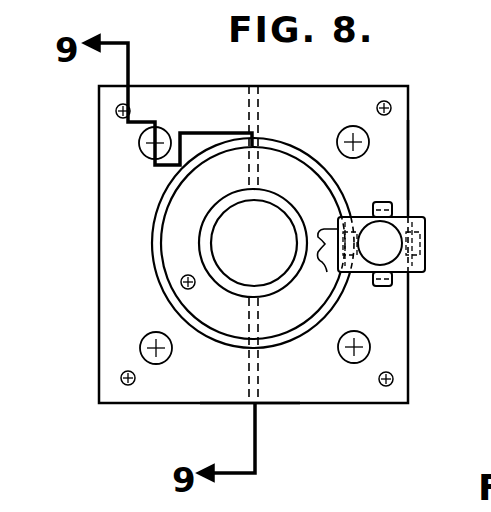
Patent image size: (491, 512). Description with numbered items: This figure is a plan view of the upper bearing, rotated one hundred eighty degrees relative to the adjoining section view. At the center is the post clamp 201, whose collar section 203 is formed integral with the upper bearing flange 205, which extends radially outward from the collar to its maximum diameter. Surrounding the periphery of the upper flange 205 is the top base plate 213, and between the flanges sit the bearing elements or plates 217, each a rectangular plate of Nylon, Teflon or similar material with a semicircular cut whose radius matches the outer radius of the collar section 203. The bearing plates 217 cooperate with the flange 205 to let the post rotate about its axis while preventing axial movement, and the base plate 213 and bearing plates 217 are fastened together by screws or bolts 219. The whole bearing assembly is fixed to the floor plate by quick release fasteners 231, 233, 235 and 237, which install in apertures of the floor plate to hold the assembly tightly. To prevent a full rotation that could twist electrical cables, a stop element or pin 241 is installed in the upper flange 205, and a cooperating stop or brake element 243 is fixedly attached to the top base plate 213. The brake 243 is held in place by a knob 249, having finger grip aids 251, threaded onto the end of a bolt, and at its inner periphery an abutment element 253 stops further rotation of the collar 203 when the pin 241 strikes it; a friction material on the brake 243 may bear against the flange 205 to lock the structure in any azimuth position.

The post clamp 201 is at (184, 212).
The collar section 203 is at (209, 243).
The upper bearing flange 205 is at (277, 160).
The top base plate 213 is at (392, 156).
The bearing element or plate 217 is at (246, 386).
The screws or bolts 219 is at (391, 105).
The quick release fastener 231 is at (139, 148).
The quick release fastener 233 is at (140, 344).
The quick release fastener 235 is at (369, 140).
The quick release fastener 237 is at (345, 358).
The stop element or pin 241 is at (182, 278).
The stop or brake element 243 is at (420, 262).
The knob 249 is at (393, 228).
The finger grip aids 251 is at (348, 232).
The abutment element 253 is at (324, 268).